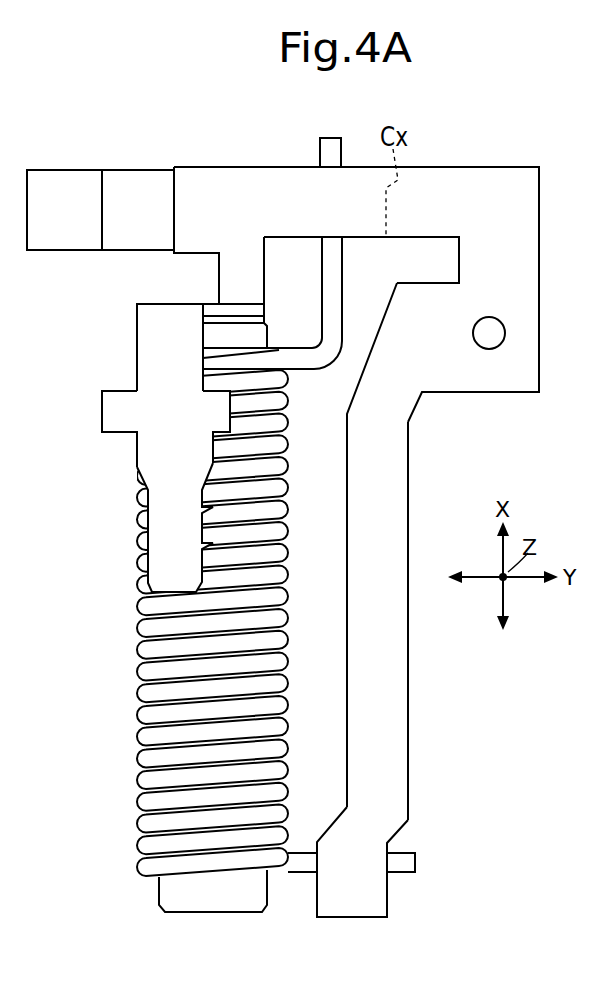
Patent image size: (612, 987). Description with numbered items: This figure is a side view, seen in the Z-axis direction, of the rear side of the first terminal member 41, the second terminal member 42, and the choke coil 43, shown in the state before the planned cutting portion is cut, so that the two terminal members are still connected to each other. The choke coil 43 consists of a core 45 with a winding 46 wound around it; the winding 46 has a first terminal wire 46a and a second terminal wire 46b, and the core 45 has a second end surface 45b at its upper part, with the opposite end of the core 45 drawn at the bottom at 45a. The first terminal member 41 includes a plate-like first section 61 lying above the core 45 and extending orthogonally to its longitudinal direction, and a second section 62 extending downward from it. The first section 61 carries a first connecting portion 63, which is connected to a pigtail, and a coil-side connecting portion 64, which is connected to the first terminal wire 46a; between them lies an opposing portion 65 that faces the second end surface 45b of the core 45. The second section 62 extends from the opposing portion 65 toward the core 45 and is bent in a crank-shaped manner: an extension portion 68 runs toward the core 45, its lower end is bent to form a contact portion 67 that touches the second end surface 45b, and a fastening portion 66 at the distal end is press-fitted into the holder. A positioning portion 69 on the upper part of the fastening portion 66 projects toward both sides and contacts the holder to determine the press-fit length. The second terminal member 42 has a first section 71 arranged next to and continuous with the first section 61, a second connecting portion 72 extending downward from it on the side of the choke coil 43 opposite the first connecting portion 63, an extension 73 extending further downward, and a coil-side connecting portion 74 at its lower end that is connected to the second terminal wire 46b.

The first terminal member 41 is at (282, 166).
The second terminal member 42 is at (518, 167).
The choke coil 43 is at (71, 831).
The core 45 is at (160, 893).
The block bottom face 45a is at (205, 913).
The second end surface 45b is at (248, 310).
The winding 46 is at (138, 828).
The first terminal wire 46a is at (338, 138).
The second terminal wire 46b is at (416, 862).
The first section 61 is at (160, 166).
The second section 62 is at (265, 252).
The first connecting portion 63 is at (66, 178).
The coil-side connecting portion 64 is at (333, 198).
The opposing portion 65 is at (212, 178).
The fastening portion 66 is at (170, 537).
The contact portion 67 is at (213, 308).
The extension portion 68 is at (233, 276).
The positioning portion 69 is at (112, 395).
The first section 71 is at (480, 178).
The second connecting portion 72 is at (507, 360).
The extension 73 is at (409, 650).
The coil-side connecting portion 74 is at (352, 863).